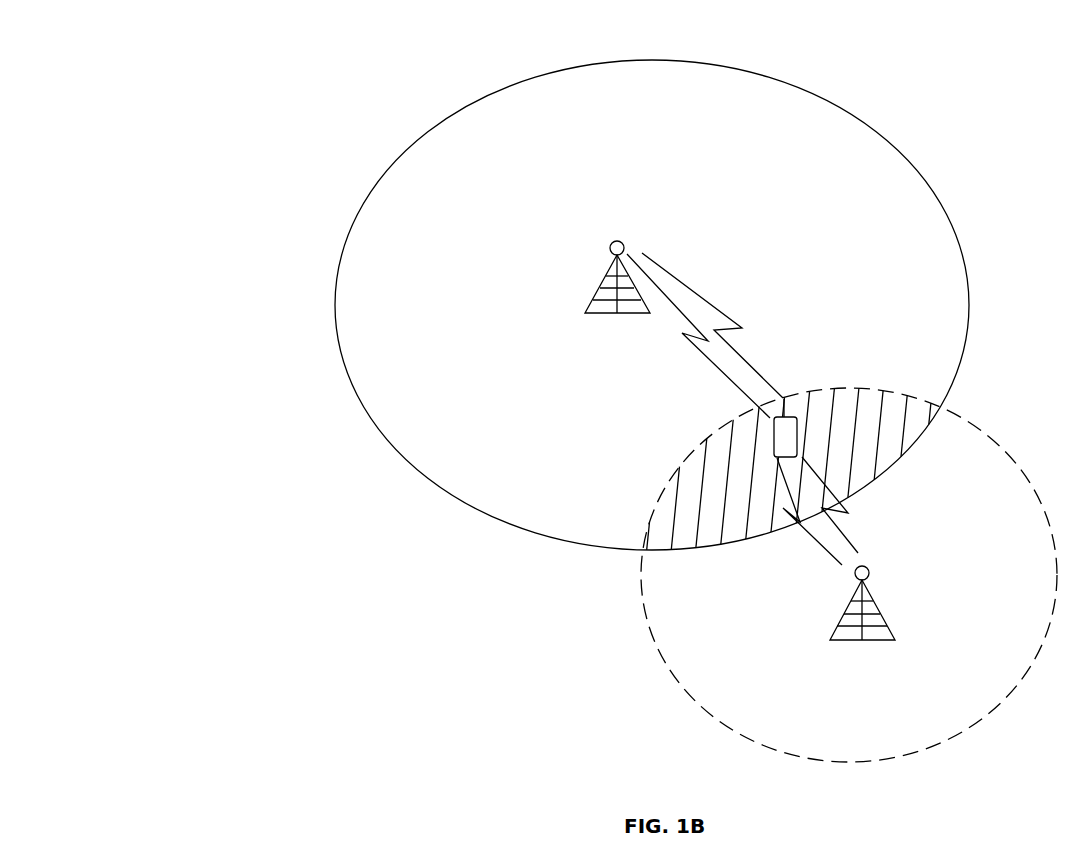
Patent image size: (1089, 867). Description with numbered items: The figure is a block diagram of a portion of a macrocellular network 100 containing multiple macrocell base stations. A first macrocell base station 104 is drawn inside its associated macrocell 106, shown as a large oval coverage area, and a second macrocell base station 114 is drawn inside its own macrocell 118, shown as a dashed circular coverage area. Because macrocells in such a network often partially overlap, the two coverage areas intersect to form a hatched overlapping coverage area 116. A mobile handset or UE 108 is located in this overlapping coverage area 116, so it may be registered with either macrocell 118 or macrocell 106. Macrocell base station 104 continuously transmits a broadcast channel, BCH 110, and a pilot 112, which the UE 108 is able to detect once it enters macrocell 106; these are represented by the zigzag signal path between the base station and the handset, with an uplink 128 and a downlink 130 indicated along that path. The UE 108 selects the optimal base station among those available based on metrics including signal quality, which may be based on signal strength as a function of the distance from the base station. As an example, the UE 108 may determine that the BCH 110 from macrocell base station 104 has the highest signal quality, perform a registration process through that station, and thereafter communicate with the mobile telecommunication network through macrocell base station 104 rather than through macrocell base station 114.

The macrocellular network 100 is at (152, 87).
The macrocell base station 104 is at (628, 244).
The macrocell 106 is at (858, 117).
The mobile handset (UE) 108 is at (774, 446).
The broadcast channel (BCH) 110 is at (735, 345).
The pilot 112 is at (735, 345).
The macrocell base station 114 is at (883, 604).
The overlapping coverage area 116 is at (841, 399).
The macrocell 118 is at (987, 432).
The uplink 128 is at (702, 289).
The downlink 130 is at (676, 345).